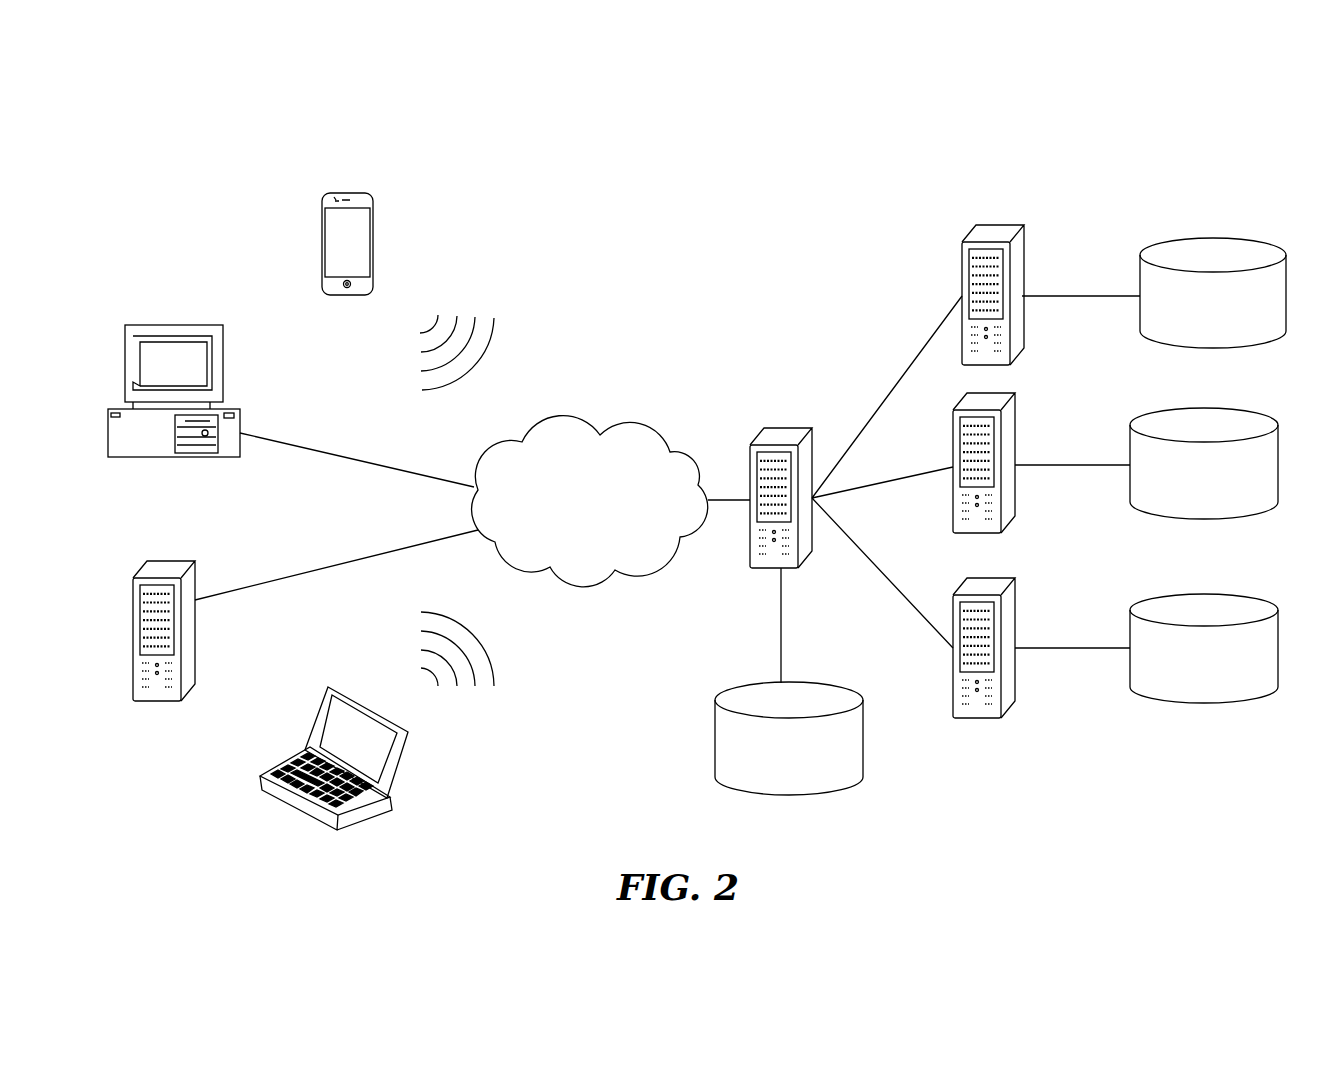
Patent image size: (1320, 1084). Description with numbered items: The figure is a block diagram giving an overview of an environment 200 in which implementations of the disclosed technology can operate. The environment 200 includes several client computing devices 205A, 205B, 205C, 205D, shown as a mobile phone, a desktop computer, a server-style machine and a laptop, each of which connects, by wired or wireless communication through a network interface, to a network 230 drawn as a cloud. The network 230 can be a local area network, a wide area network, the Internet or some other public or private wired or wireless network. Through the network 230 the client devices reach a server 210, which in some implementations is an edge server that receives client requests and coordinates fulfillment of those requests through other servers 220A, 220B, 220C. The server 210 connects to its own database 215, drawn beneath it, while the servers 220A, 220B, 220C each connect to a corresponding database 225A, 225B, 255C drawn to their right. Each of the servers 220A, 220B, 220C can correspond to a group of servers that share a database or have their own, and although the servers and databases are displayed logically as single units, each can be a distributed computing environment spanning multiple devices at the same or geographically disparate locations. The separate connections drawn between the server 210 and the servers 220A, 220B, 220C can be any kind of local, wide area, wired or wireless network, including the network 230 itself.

The environment 200 is at (798, 201).
The client computing device 205A is at (370, 191).
The client computing device 205B is at (216, 326).
The client computing device 205C is at (186, 562).
The client computing device 205D is at (408, 742).
The server 210 is at (792, 428).
The database 215 is at (838, 686).
The server 220A is at (1020, 227).
The server 220B is at (1014, 395).
The server 220C is at (1014, 581).
The database 225A is at (1213, 238).
The database 225B is at (1200, 408).
The database 255C is at (1200, 594).
The network 230 is at (642, 422).